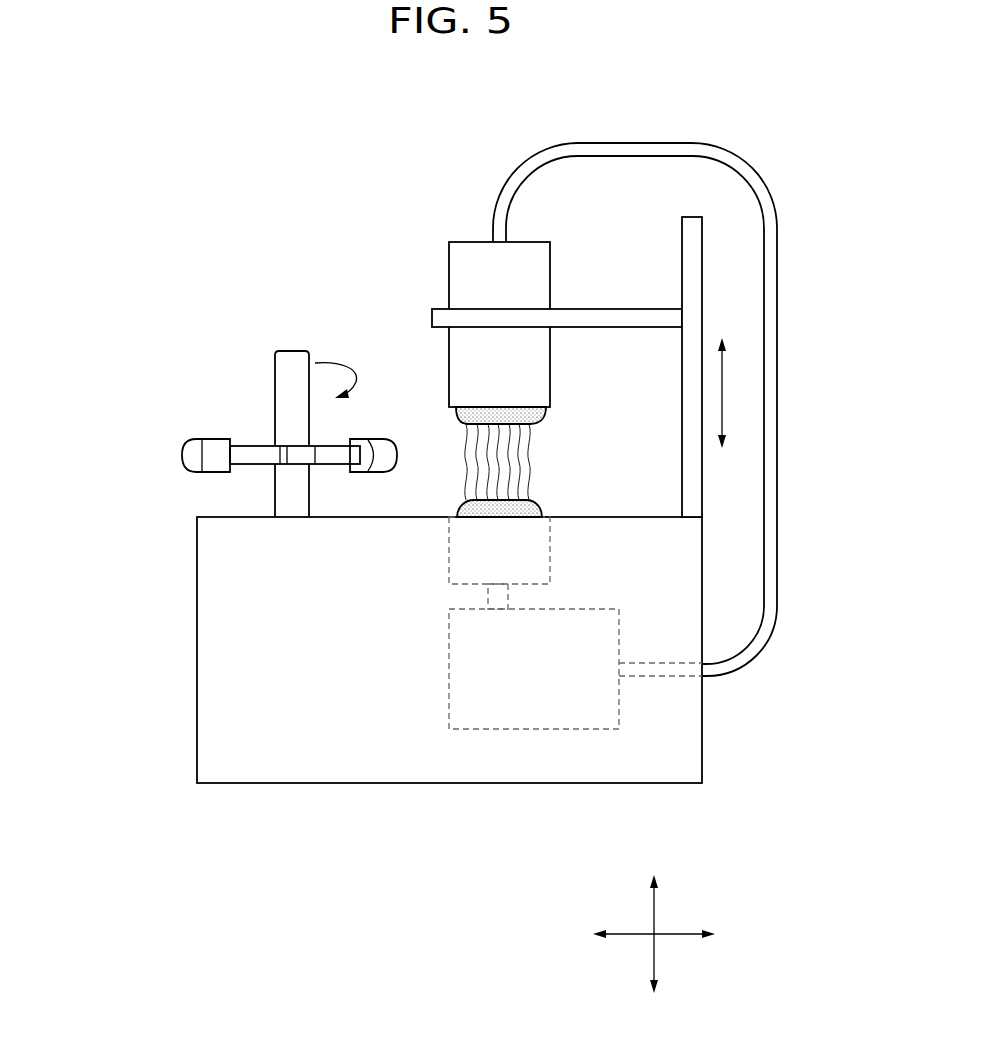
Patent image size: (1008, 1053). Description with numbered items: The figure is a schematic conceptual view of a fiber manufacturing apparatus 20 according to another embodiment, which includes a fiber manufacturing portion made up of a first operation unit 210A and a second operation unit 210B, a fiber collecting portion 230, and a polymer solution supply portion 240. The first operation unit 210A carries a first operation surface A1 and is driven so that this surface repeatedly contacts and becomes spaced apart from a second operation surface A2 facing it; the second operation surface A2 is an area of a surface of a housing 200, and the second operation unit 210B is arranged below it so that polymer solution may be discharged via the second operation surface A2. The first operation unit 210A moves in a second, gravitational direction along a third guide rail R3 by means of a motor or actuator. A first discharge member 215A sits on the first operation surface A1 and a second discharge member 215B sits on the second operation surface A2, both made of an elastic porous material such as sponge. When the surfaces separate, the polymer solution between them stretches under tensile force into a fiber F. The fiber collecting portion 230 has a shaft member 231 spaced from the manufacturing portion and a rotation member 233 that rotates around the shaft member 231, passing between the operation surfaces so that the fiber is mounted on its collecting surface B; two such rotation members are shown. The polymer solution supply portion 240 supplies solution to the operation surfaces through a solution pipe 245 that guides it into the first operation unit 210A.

The fiber manufacturing apparatus 20 is at (803, 134).
The housing 200 is at (693, 728).
The first operation unit 210A is at (548, 263).
The second operation unit 210B is at (449, 562).
The first discharge member 215A is at (511, 407).
The second discharge member 215B is at (514, 497).
The first operation surface A1 is at (463, 418).
The second operation surface A2 is at (470, 511).
The fiber F is at (529, 457).
The third guide rail R3 is at (695, 257).
The fiber collecting portion 230 is at (241, 406).
The shaft member 231 is at (295, 362).
The rotation member 233 is at (241, 469).
The collecting surface B is at (213, 466).
The polymer solution supply portion 240 is at (502, 729).
The solution pipe 245 is at (772, 540).